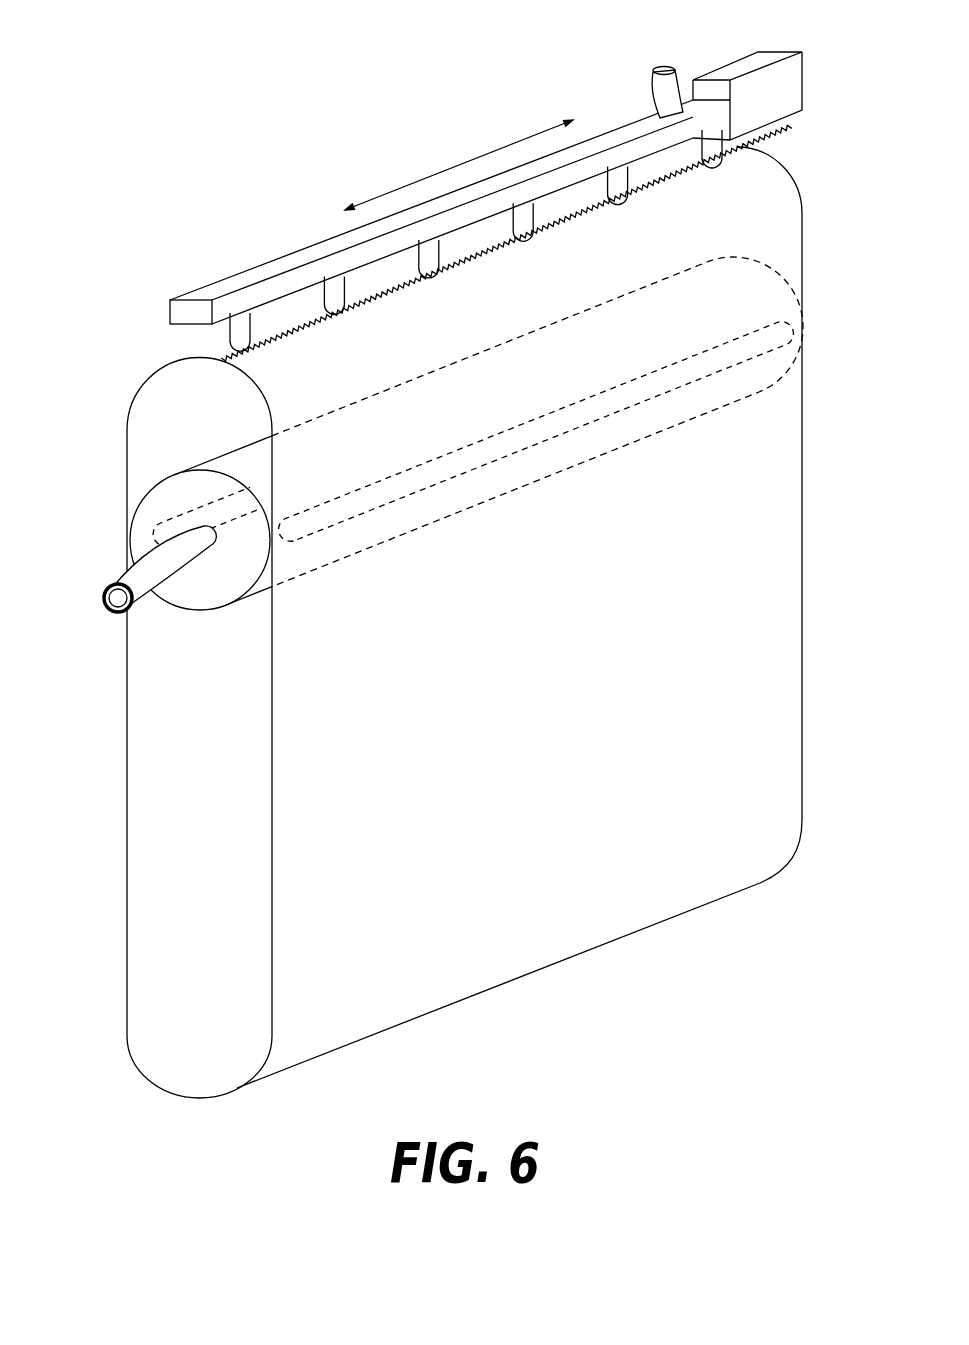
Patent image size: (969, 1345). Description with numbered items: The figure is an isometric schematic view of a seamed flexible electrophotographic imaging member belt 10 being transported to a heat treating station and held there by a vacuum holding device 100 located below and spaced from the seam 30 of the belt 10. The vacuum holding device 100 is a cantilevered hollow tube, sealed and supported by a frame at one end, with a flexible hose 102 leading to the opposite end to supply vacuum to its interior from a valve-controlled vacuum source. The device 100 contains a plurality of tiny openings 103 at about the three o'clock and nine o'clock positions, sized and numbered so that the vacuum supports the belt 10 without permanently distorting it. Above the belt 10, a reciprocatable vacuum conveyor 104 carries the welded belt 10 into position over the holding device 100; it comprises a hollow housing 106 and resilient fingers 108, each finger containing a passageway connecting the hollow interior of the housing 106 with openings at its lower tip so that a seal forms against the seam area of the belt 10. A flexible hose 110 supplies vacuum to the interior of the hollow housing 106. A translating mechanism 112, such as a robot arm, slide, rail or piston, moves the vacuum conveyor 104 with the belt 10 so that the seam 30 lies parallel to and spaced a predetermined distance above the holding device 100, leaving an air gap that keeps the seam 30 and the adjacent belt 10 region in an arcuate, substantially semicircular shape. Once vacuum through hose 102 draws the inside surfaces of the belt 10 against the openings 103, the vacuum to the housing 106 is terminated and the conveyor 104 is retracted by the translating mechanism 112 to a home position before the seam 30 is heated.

The belt 10 is at (819, 598).
The seam 30 is at (688, 182).
The vacuum holding device 100 is at (256, 438).
The flexible hose 102 is at (114, 582).
The tiny openings 103 is at (362, 480).
The vacuum conveyor 104 is at (307, 205).
The hollow housing 106 is at (233, 278).
The resilient fingers 108 is at (248, 350).
The flexible hose 110 is at (677, 68).
The translating mechanism 112 is at (787, 52).